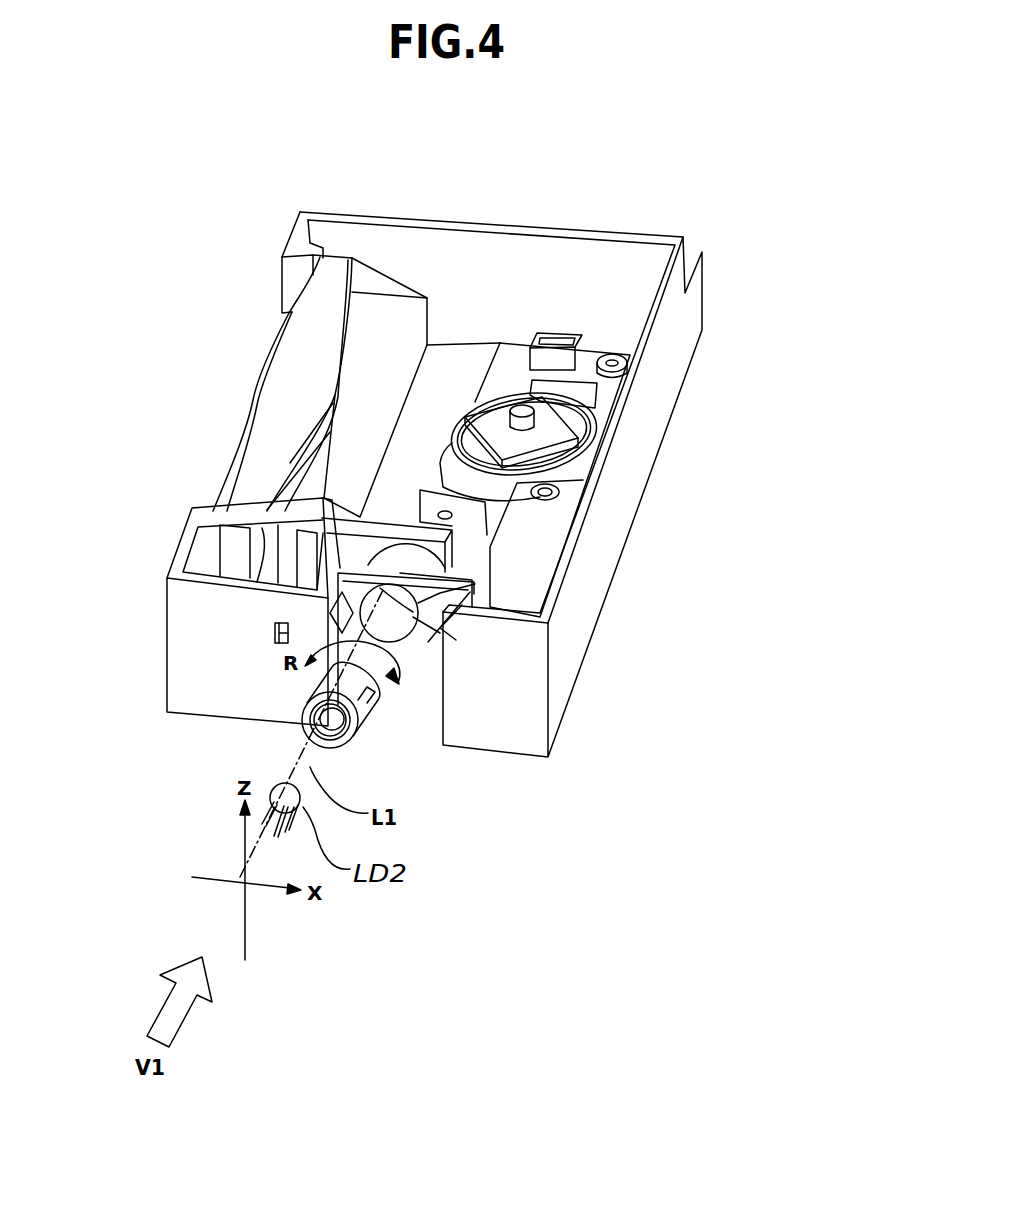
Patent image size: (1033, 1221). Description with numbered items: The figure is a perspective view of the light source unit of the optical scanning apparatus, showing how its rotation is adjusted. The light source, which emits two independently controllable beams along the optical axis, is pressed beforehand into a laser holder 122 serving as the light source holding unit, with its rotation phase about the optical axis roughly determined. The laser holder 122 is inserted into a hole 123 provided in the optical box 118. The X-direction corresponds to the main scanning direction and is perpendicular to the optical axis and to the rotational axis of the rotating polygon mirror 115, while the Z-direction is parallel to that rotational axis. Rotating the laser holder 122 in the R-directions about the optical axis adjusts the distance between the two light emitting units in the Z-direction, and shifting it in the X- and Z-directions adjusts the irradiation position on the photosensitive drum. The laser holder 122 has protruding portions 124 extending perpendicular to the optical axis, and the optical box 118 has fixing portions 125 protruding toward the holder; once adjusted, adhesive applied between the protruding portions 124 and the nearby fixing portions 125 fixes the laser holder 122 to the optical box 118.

The optical box 118 is at (688, 319).
The rotating polygon mirror 115 is at (557, 427).
The fixing portions 125 is at (340, 570).
The hole 123 is at (457, 587).
The protruding portions 124 is at (303, 713).
The laser holder 122 is at (357, 737).